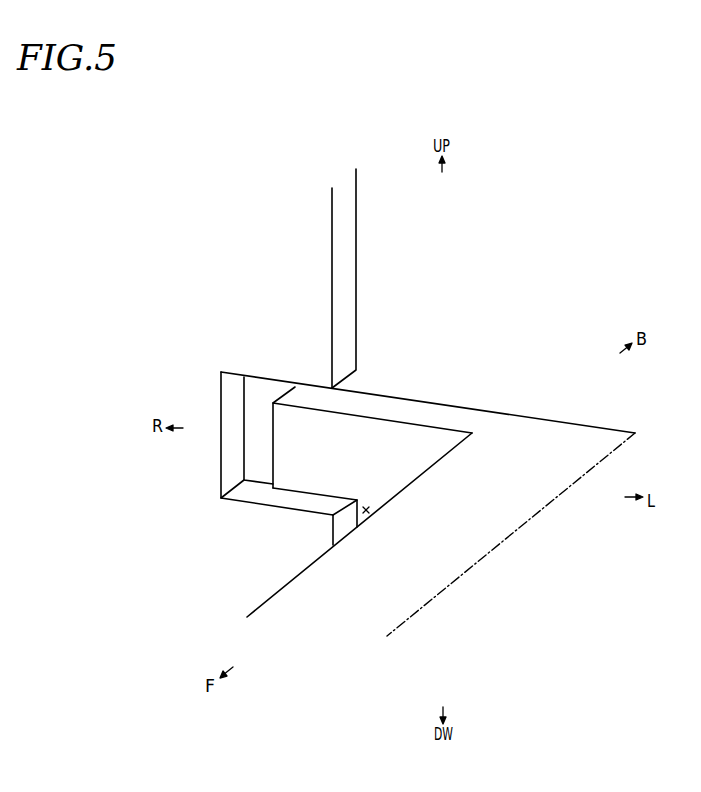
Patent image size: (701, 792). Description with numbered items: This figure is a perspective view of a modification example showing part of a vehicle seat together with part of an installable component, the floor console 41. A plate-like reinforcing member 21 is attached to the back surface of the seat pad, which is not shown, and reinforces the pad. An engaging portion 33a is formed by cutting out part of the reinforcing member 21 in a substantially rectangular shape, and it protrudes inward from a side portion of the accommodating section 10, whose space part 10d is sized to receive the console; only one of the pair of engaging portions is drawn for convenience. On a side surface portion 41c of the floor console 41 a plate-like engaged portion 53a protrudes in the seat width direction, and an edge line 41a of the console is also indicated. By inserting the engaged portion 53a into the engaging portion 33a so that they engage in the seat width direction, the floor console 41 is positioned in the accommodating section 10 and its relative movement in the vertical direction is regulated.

The reinforcing member 21 is at (345, 230).
The engaging portion 33a is at (254, 381).
The engaged portion 53a is at (372, 448).
The space part 10d is at (368, 510).
The accommodating section 10 is at (414, 441).
The floor console 41 is at (570, 425).
The panel edge line 41a is at (493, 512).
The side surface portion 41c is at (290, 580).